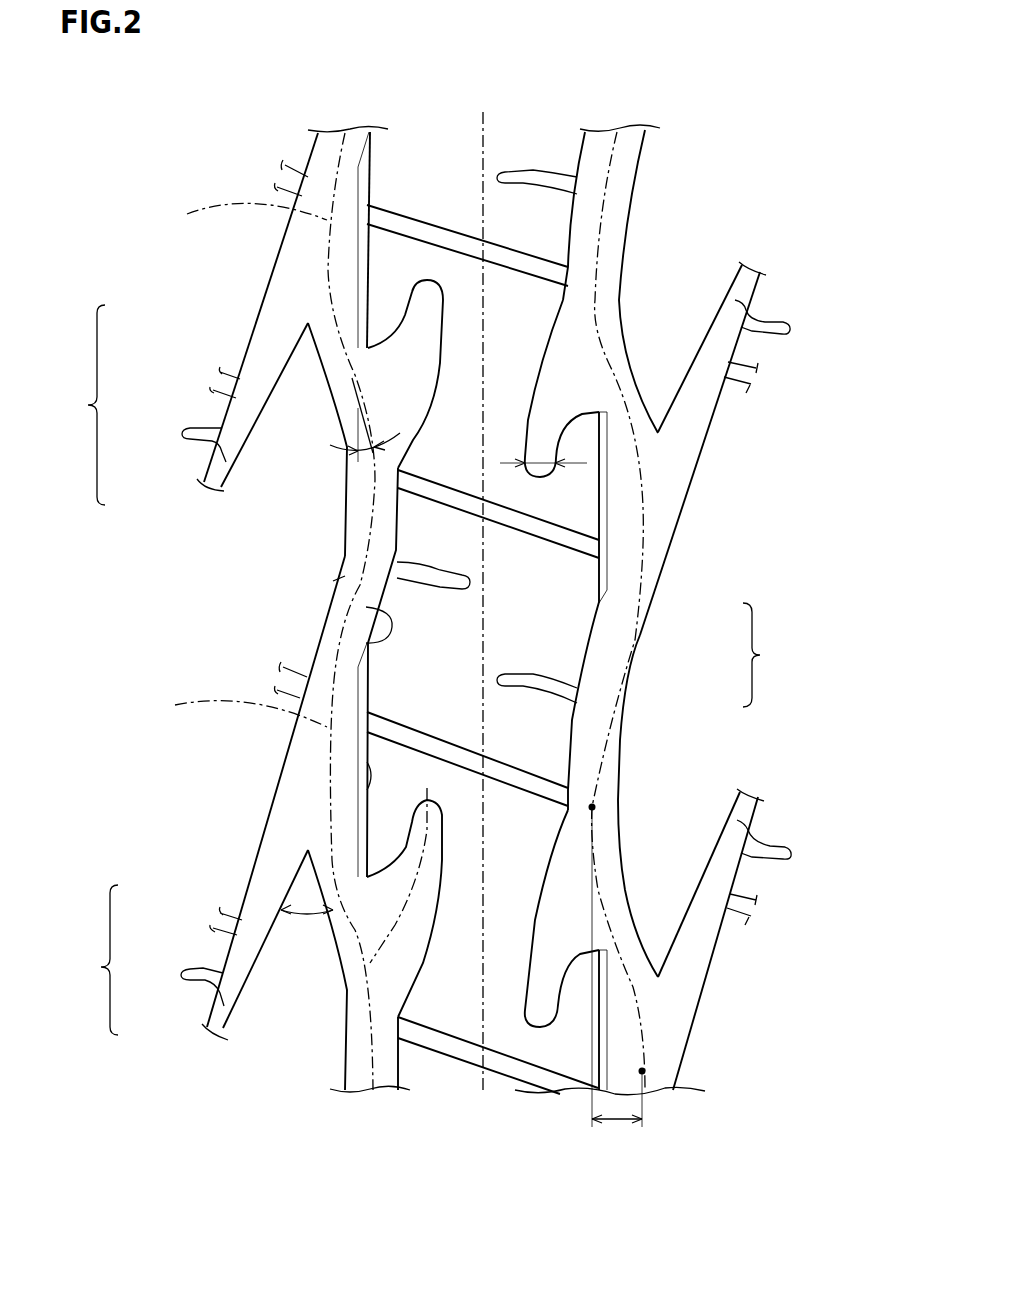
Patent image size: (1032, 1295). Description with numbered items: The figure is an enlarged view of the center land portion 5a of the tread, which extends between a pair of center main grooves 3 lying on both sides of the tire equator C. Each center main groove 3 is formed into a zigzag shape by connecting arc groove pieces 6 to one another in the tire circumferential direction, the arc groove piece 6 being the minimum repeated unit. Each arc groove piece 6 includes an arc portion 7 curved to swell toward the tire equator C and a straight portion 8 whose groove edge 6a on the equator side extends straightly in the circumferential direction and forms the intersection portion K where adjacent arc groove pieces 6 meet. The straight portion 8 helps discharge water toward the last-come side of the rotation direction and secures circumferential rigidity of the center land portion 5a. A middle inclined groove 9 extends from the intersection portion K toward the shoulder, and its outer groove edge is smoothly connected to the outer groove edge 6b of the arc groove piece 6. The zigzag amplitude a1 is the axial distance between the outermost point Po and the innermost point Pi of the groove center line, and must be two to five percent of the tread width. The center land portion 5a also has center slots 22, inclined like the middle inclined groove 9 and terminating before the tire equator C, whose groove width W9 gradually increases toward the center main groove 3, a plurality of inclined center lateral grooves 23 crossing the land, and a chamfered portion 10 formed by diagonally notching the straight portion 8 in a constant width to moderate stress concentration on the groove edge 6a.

The center main groove 3 is at (337, 124).
The center land portion 5a is at (413, 138).
The center lateral groove 23 is at (520, 262).
The center slot 22 is at (560, 387).
The straight portion 8 is at (313, 252).
The middle inclined groove 9 is at (277, 348).
The arc portion 7 is at (363, 485).
The arc groove piece 6 is at (422, 670).
The intersection portion K is at (239, 465).
The groove edge 6a is at (380, 640).
The groove edge 6b is at (343, 583).
The chamfered portion 10 is at (363, 813).
The tire equator C is at (485, 589).
The groove width W9 is at (548, 475).
The innermost point Pi is at (596, 807).
The outermost point Po is at (646, 1071).
The zigzag amplitude a1 is at (617, 979).